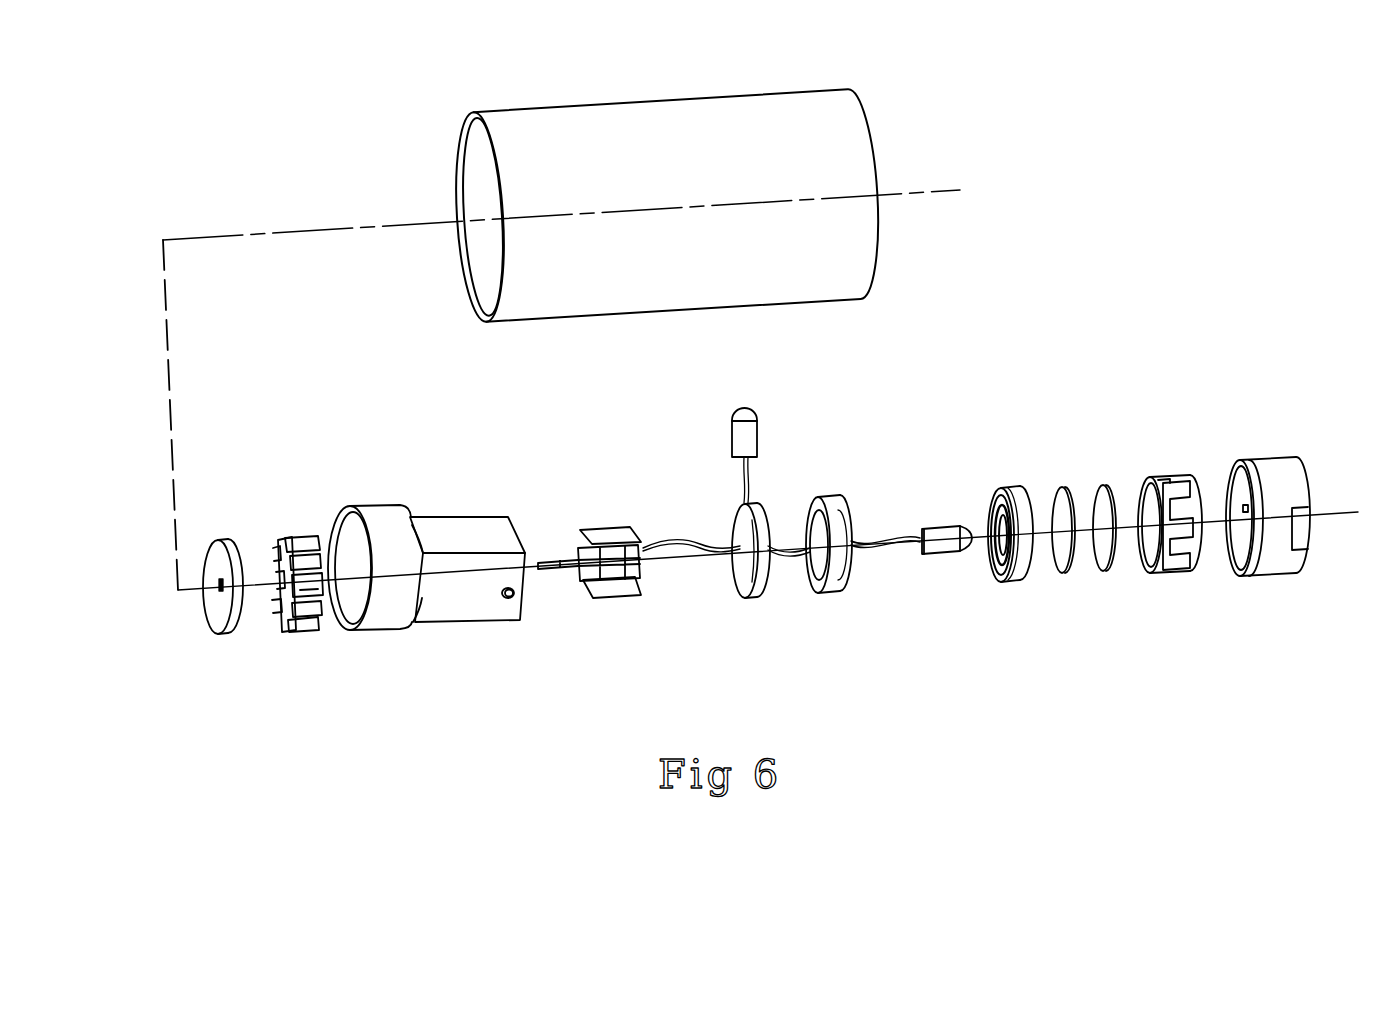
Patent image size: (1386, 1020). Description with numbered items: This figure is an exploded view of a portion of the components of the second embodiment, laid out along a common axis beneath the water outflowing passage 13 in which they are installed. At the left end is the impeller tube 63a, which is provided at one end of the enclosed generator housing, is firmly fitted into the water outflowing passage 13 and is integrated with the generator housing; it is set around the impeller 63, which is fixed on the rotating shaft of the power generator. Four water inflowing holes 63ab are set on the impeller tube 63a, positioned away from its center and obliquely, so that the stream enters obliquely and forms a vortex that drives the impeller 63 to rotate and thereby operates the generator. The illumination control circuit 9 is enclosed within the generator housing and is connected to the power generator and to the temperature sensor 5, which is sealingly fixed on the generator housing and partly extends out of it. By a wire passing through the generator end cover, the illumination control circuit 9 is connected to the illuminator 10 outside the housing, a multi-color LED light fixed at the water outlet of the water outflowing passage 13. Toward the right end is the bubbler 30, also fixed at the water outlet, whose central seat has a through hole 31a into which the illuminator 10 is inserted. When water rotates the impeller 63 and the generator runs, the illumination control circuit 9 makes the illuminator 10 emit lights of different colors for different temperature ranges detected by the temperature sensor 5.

The water outflowing passage 13 is at (478, 197).
The temperature sensor 5 is at (750, 430).
The illumination control circuit 9 is at (745, 573).
The illuminator 10 is at (942, 547).
The bubbler 30 is at (1060, 539).
The through hole 31a is at (990, 540).
The impeller 63 is at (293, 547).
The impeller tube 63a is at (380, 523).
The water inflowing holes 63ab is at (217, 587).